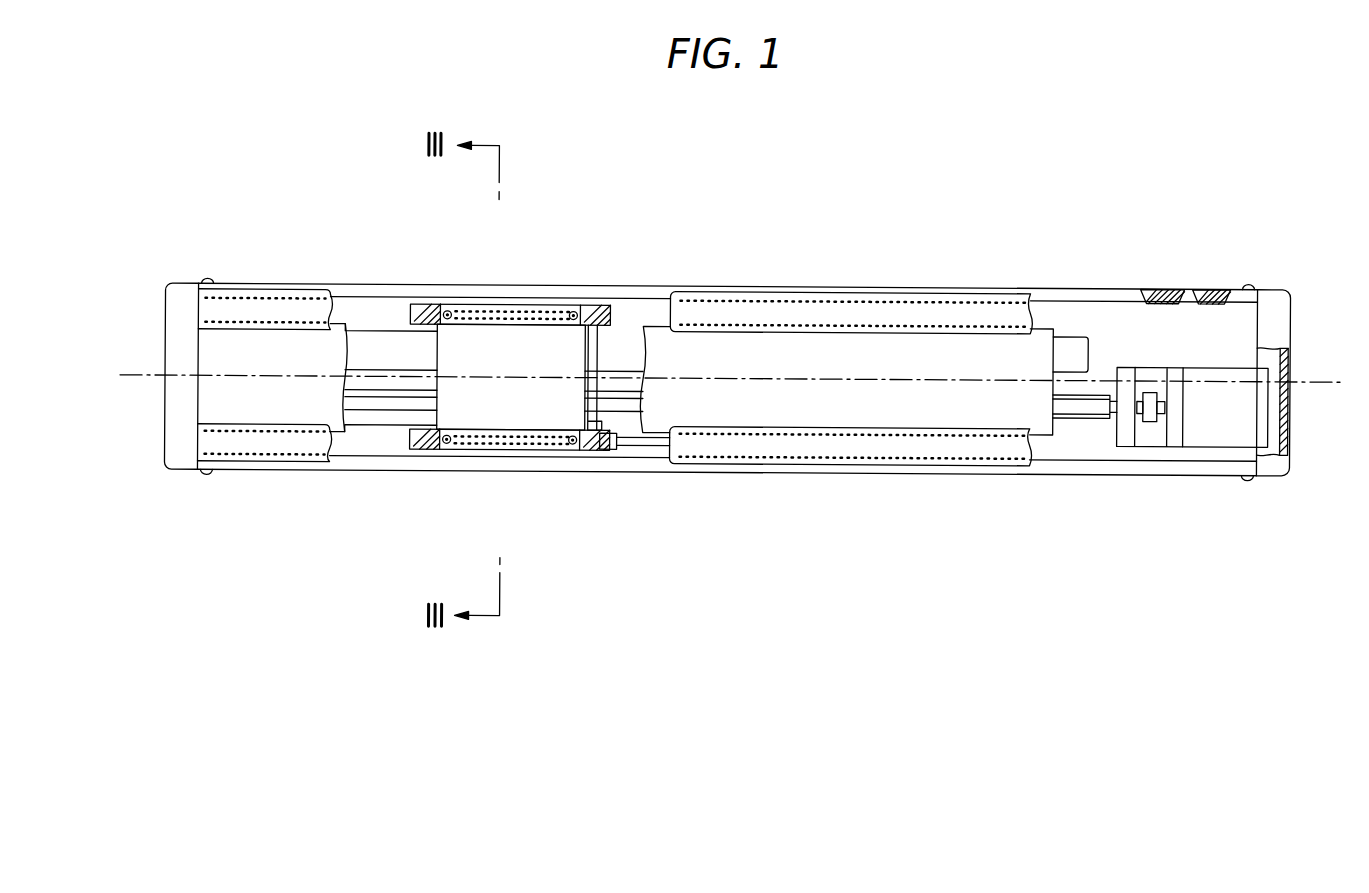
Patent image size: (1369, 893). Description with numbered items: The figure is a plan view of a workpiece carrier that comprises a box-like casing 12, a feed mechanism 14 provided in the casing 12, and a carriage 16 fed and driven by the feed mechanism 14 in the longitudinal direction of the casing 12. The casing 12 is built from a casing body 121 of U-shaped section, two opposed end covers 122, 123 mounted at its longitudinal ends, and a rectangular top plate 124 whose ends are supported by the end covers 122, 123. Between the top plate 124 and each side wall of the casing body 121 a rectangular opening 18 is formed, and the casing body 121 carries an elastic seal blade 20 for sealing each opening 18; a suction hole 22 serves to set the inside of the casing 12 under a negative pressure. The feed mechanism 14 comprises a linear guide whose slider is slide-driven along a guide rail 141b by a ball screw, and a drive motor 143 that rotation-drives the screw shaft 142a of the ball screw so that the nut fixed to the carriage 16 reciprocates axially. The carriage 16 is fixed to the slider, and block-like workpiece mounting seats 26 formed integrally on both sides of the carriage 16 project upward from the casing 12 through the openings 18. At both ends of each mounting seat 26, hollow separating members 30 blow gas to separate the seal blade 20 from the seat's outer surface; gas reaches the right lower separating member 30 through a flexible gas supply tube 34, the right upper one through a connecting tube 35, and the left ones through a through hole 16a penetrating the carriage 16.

The casing 12 is at (694, 283).
The feed mechanism 14 is at (1104, 347).
The carriage 16 is at (539, 407).
The through hole 16a is at (517, 307).
The rectangular opening 18 is at (337, 285).
The elastic seal blade 20 is at (775, 306).
The suction hole 22 is at (1188, 296).
The workpiece mounting seat 26 is at (567, 306).
The separating member 30 is at (411, 306).
The gas supply tube 34 is at (639, 456).
The connecting tube 35 is at (603, 352).
The casing body 121 is at (654, 298).
The end cover 122 is at (171, 321).
The end cover 123 is at (1278, 321).
The top plate 124 is at (868, 350).
The guide rail 141b is at (386, 347).
The screw shaft 142a is at (383, 408).
The drive motor 143 is at (1208, 432).